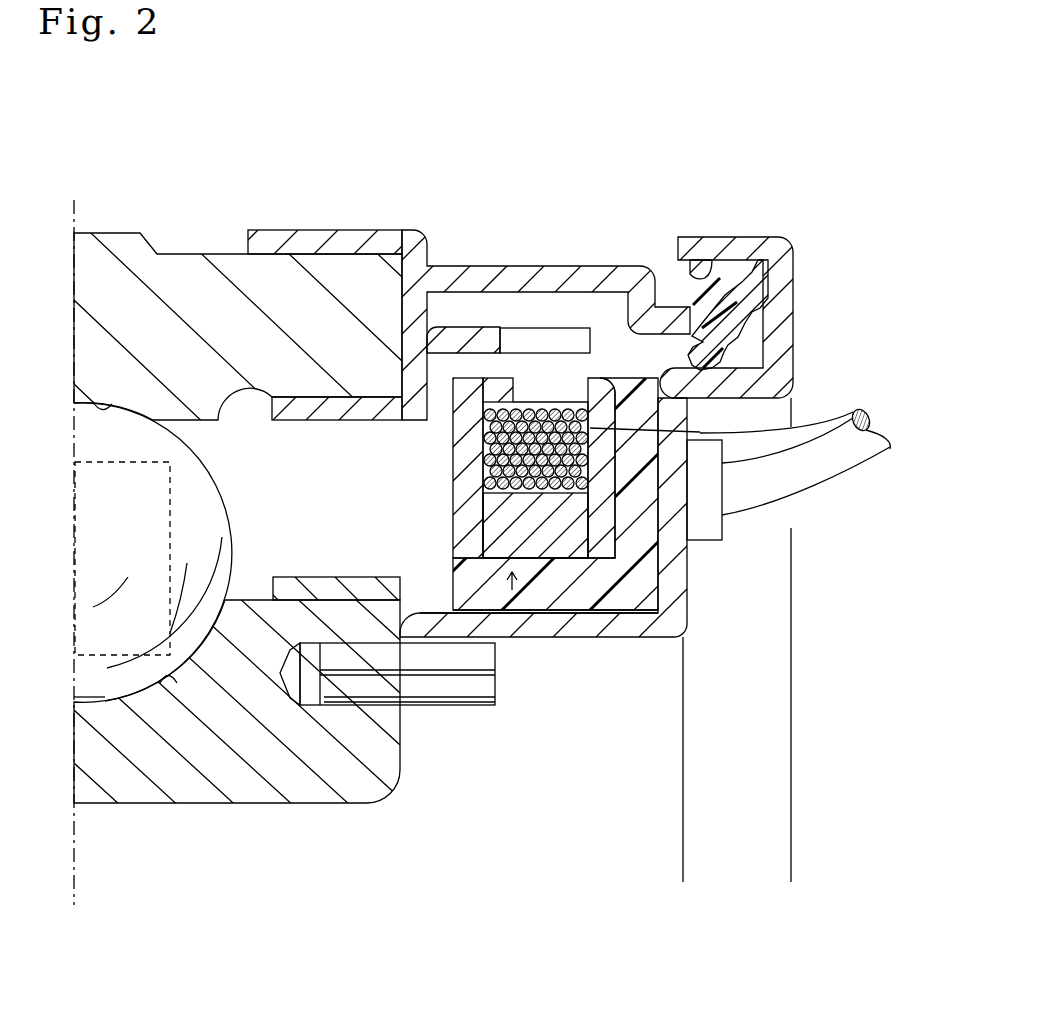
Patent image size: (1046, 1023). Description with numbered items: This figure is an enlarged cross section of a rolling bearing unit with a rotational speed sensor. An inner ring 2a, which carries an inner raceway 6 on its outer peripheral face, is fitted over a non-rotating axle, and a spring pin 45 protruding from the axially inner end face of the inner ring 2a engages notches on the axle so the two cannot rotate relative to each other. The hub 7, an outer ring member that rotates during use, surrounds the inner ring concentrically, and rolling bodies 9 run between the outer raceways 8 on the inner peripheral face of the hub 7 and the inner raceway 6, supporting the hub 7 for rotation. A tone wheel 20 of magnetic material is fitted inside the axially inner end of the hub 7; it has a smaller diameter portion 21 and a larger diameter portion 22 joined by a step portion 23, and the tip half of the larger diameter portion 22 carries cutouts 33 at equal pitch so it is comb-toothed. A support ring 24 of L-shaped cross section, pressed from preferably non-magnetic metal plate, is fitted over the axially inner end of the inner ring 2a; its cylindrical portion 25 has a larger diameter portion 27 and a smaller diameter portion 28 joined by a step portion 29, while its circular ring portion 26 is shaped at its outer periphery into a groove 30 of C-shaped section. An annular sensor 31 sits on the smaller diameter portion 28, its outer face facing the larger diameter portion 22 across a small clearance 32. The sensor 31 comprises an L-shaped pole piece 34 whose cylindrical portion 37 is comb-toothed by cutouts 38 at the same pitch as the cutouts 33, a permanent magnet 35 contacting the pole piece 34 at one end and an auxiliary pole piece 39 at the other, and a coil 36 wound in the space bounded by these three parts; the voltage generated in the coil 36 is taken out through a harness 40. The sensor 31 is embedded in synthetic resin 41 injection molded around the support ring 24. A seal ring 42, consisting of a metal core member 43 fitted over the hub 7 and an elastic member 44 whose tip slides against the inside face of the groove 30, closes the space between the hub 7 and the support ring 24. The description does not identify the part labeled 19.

The inner ring 2a is at (283, 778).
The inner raceway 6 is at (162, 688).
The hub 7 is at (145, 290).
The outer raceway 8 is at (95, 400).
The rolling body 9 is at (110, 690).
The gap 19 is at (300, 517).
The tone wheel 20 is at (487, 367).
The smaller diameter portion 21 is at (305, 400).
The larger diameter portion 22 is at (432, 327).
The step portion 23 is at (490, 350).
The support ring 24 is at (677, 620).
The cylindrical portion 25 is at (586, 627).
The circular ring portion 26 is at (677, 585).
The larger diameter portion 27 is at (340, 590).
The smaller diameter portion 28 is at (560, 540).
The step portion 29 is at (398, 607).
The groove 30 is at (773, 237).
The sensor 31 is at (518, 627).
The clearance 32 is at (490, 380).
The cutout 33 is at (593, 380).
The pole piece 34 is at (610, 532).
The permanent magnet 35 is at (650, 593).
The coil 36 is at (700, 432).
The cylindrical portion 37 is at (530, 392).
The cutout 38 is at (553, 392).
The auxiliary pole piece 39 is at (467, 453).
The harness 40 is at (805, 487).
The synthetic resin 41 is at (537, 595).
The seal ring 42 is at (402, 233).
The core member 43 is at (260, 243).
The elastic member 44 is at (717, 258).
The spring pin 45 is at (441, 685).